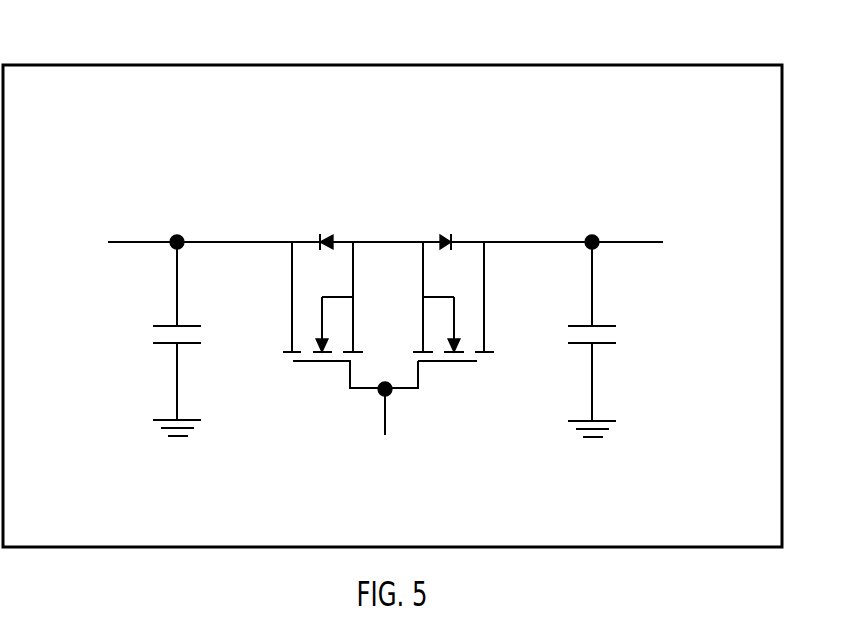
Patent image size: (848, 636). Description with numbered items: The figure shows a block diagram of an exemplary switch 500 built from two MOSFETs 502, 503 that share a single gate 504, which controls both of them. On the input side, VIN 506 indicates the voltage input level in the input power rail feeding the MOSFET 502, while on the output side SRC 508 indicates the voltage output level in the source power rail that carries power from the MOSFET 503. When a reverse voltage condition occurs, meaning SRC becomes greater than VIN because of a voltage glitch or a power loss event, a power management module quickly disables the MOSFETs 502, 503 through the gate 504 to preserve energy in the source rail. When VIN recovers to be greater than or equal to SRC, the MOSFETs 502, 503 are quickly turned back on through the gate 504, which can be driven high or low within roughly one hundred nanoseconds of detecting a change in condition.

The switch 500 is at (63, 64).
The MOSFET 502 is at (307, 300).
The MOSFET 503 is at (470, 297).
The gate 504 is at (424, 457).
The VIN 506 is at (78, 220).
The SRC 508 is at (694, 219).